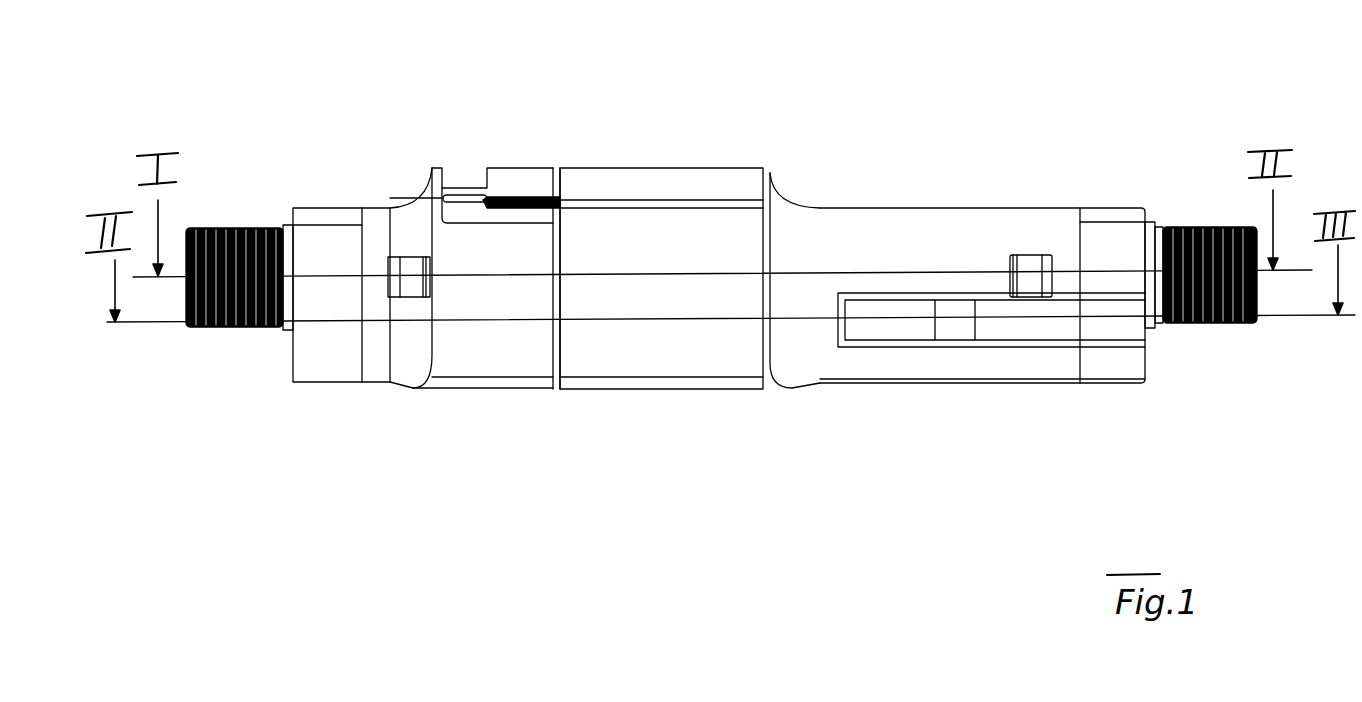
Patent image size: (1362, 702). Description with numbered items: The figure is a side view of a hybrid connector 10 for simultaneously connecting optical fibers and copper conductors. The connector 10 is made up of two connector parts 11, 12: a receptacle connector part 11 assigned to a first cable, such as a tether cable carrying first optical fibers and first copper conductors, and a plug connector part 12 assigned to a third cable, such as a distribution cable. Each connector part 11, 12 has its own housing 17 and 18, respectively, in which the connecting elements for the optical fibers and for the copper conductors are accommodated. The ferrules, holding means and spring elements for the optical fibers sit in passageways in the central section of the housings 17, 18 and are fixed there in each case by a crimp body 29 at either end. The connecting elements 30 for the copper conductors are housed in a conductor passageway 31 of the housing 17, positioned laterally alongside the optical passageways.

The connector 10 is at (720, 289).
The receptacle connector part 11 is at (737, 396).
The plug connector part 12 is at (462, 396).
The housing 17 is at (938, 234).
The housing 18 is at (373, 236).
The crimp body 29 is at (250, 227).
The connecting elements for copper conductors 30 is at (893, 332).
The conductor passageway 31 is at (1094, 345).